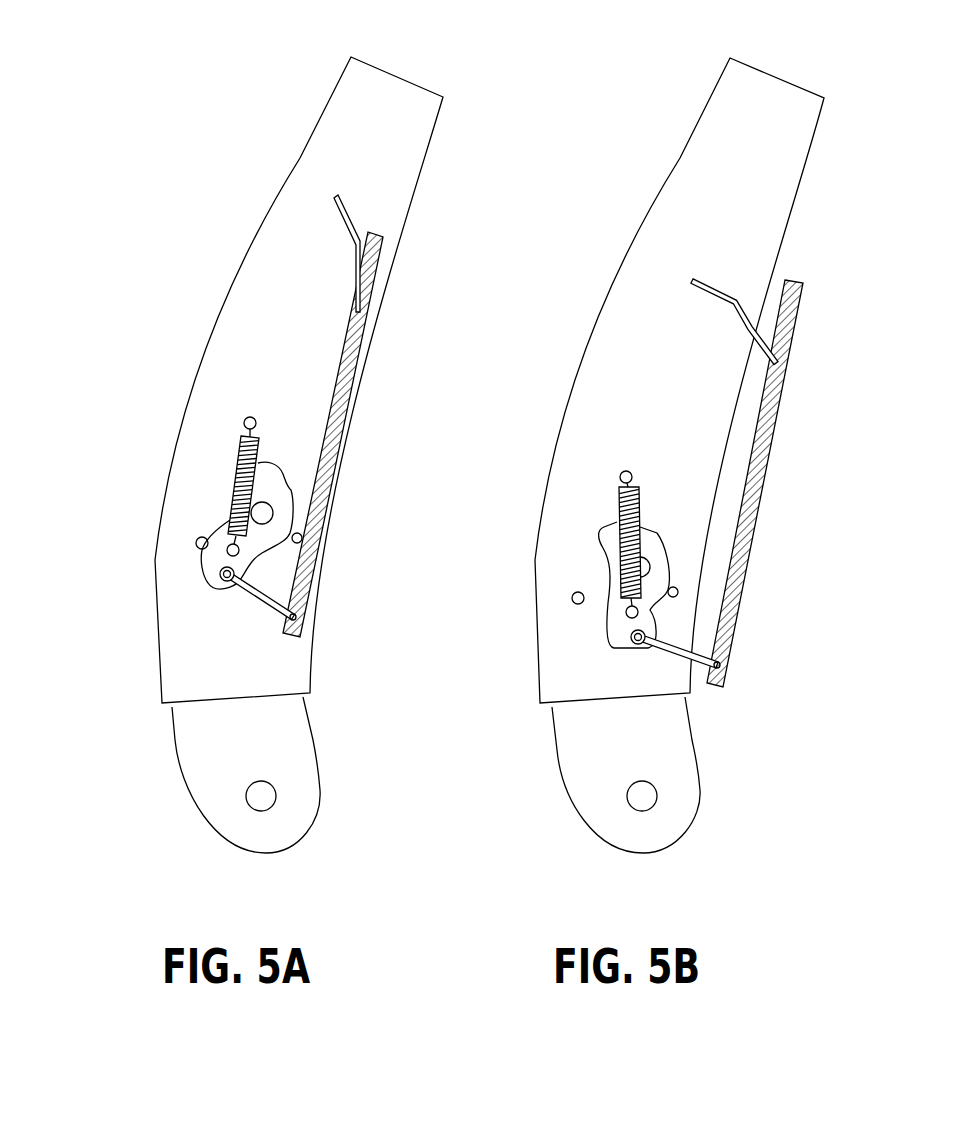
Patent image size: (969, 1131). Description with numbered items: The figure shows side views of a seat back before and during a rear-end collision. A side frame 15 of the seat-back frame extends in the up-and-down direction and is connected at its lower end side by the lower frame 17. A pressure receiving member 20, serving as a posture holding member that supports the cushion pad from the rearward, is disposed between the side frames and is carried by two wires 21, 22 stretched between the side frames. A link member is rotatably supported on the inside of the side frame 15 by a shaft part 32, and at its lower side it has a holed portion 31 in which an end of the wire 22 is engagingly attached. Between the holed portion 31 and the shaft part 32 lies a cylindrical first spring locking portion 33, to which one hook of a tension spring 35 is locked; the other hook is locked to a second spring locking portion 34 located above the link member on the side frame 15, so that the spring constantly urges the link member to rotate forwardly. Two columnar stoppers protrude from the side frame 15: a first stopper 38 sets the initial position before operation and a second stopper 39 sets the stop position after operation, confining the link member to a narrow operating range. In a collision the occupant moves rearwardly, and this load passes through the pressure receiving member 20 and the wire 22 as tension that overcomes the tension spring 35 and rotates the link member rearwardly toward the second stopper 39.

In FIG. 5A, the side frame 15 is at (220, 317).
In FIG. 5B, the side frame 15 is at (585, 352).
In FIG. 5A, the lower frame 17 is at (175, 748).
In FIG. 5B, the lower frame 17 is at (557, 753).
In FIG. 5A, the pressure receiving member 20 is at (342, 322).
In FIG. 5B, the pressure receiving member 20 is at (803, 368).
In FIG. 5A, the wire 21 is at (337, 207).
In FIG. 5B, the wire 21 is at (687, 292).
In FIG. 5A, the wire 22 is at (250, 607).
In FIG. 5B, the wire 22 is at (657, 657).
In FIG. 5A, the holed portion 31 is at (220, 576).
In FIG. 5B, the holed portion 31 is at (631, 648).
In FIG. 5A, the shaft part 32 is at (270, 503).
In FIG. 5B, the shaft part 32 is at (650, 557).
In FIG. 5A, the first spring locking portion 33 is at (227, 548).
In FIG. 5B, the first spring locking portion 33 is at (626, 616).
In FIG. 5A, the second spring locking portion 34 is at (246, 418).
In FIG. 5B, the second spring locking portion 34 is at (622, 472).
In FIG. 5A, the tension spring 35 is at (238, 470).
In FIG. 5B, the tension spring 35 is at (618, 508).
In FIG. 5A, the first stopper 38 is at (196, 541).
In FIG. 5B, the first stopper 38 is at (576, 592).
In FIG. 5A, the second stopper 39 is at (302, 538).
In FIG. 5B, the second stopper 39 is at (678, 589).